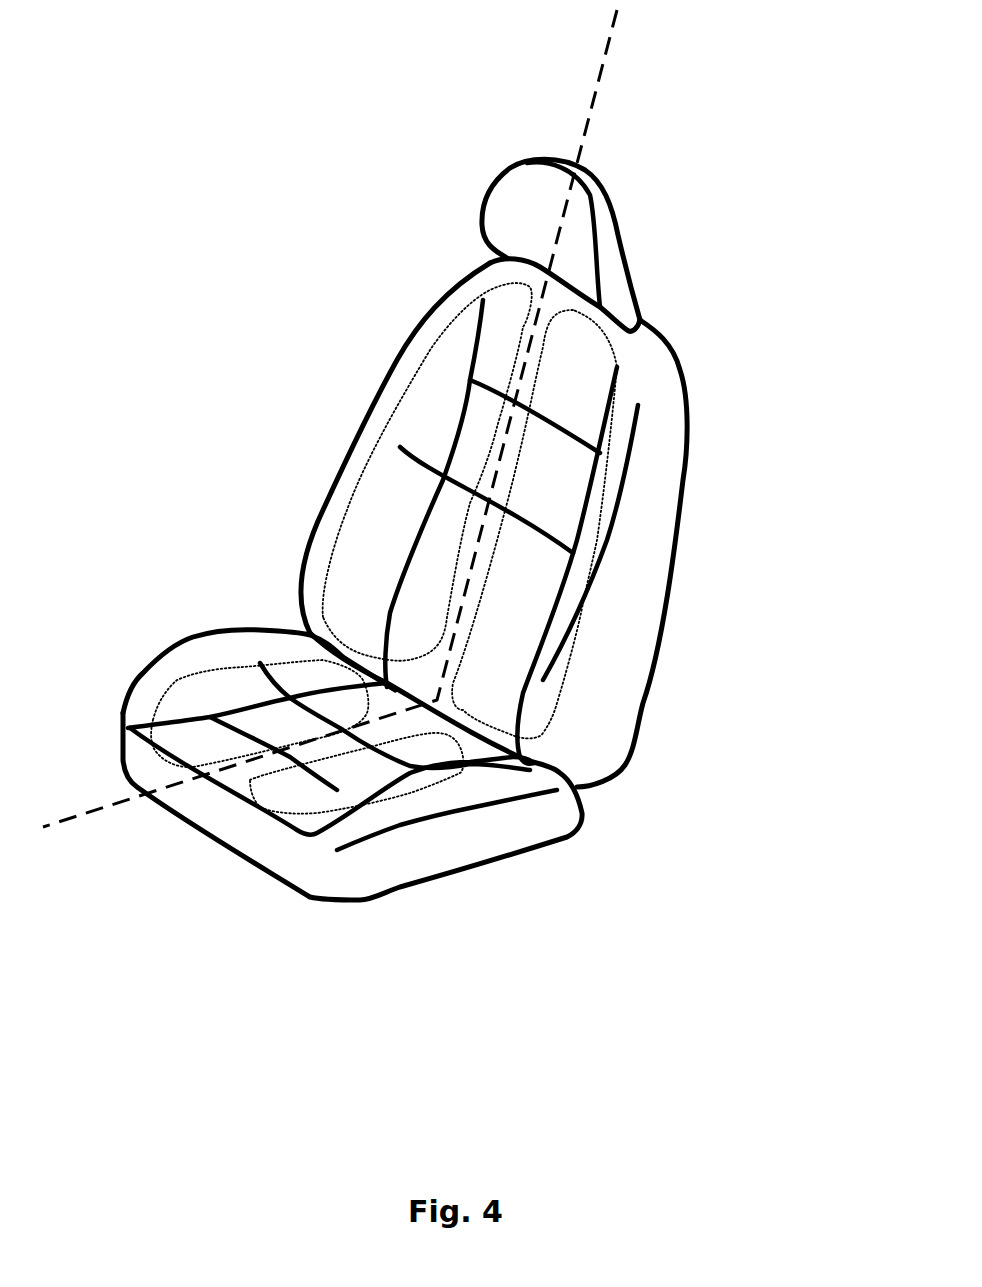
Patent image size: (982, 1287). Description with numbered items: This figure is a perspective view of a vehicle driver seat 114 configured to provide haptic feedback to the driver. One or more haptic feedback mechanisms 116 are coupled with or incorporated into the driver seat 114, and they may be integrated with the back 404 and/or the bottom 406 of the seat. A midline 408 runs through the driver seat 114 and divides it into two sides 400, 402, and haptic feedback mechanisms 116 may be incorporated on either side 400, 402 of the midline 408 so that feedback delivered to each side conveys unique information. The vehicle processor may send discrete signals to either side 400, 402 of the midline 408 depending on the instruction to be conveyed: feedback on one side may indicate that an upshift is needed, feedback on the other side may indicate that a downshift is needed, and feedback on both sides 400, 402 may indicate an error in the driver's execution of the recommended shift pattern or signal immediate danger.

The driver seat 114 is at (255, 157).
The haptic feedback mechanism 116 is at (403, 412).
The side of the midline 400 is at (533, 138).
The side of the midline 402 is at (613, 168).
The back 404 is at (668, 370).
The bottom 406 is at (222, 647).
The midline 408 is at (610, 22).